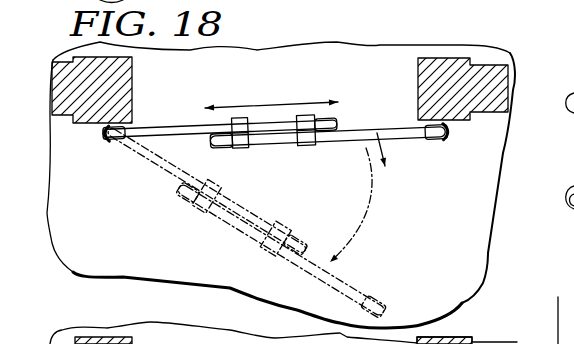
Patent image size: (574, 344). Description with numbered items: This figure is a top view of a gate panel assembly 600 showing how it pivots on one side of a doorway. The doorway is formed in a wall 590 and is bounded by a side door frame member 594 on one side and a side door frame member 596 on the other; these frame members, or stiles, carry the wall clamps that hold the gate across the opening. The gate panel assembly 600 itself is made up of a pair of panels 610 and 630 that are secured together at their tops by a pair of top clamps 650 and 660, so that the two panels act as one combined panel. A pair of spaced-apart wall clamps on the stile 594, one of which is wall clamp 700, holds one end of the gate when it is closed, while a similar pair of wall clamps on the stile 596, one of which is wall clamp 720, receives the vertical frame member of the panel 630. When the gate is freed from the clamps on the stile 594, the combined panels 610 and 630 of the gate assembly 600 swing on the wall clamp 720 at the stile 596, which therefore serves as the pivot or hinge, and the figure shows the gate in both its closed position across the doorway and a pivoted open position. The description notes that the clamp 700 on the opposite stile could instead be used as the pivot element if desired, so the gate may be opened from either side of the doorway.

The wall 590 is at (524, 76).
The side door frame member 594 is at (472, 120).
The side door frame member 596 is at (88, 126).
The gate panel assembly 600 is at (334, 98).
The panel 610 is at (370, 121).
The panel 630 is at (145, 118).
The top clamp 650 is at (238, 144).
The top clamp 660 is at (308, 143).
The wall clamp 700 is at (448, 142).
The wall clamp 720 is at (104, 148).